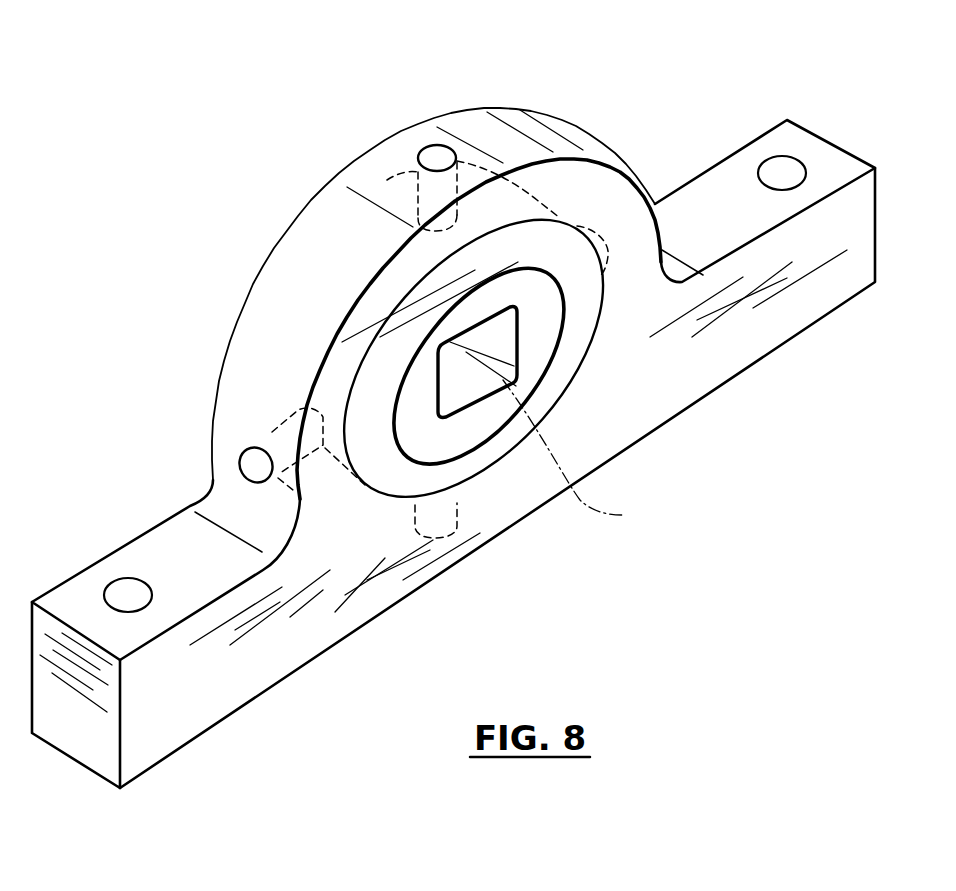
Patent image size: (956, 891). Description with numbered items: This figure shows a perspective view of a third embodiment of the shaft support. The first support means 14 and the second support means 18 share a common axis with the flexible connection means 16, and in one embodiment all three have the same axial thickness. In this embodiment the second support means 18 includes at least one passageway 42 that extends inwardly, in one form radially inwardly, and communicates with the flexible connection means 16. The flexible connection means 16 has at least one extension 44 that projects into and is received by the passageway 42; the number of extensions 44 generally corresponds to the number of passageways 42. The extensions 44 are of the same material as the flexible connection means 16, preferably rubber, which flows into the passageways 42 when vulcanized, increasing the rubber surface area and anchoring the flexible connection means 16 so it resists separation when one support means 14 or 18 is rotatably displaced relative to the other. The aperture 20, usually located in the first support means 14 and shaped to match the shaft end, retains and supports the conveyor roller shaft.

The first support means 14 is at (423, 358).
The flexible connection means 16 is at (380, 400).
The second support means 18 is at (165, 550).
The aperture 20 is at (506, 333).
The passageway 42 is at (435, 147).
The extension 44 is at (387, 180).